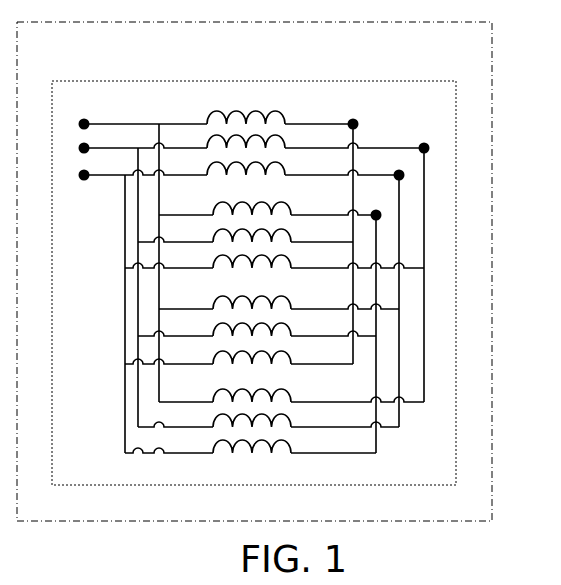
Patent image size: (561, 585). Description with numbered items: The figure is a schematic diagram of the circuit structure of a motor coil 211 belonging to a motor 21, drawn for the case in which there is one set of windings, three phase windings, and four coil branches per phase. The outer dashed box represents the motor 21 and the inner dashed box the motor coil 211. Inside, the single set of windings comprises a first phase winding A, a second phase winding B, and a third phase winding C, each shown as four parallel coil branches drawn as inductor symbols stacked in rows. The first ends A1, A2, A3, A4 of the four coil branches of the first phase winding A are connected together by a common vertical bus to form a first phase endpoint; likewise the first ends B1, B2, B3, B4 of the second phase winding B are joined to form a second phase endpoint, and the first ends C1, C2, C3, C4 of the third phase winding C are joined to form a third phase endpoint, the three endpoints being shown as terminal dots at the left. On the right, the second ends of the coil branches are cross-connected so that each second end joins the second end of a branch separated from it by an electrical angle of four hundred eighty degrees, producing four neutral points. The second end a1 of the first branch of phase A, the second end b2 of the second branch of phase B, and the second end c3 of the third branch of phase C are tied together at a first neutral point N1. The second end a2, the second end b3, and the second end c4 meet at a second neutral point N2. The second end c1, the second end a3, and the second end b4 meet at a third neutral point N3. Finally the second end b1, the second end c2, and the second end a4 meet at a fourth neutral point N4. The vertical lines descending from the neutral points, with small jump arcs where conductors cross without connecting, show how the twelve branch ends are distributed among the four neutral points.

The motor 21 is at (492, 300).
The motor coil 211 is at (238, 80).
The first phase winding A is at (143, 120).
The second phase winding B is at (143, 144).
The third phase winding C is at (143, 171).
The first neutral point N1 is at (361, 125).
The second neutral point N2 is at (374, 208).
The third neutral point N3 is at (396, 169).
The fourth neutral point N4 is at (423, 142).
The first end of first coil branch of first phase winding A1 is at (231, 116).
The second end of first coil branch of first phase winding a1 is at (319, 116).
The first end of first coil branch of second phase winding B1 is at (231, 140).
The second end of first coil branch of second phase winding b1 is at (354, 140).
The first end of first coil branch of third phase winding C1 is at (231, 167).
The second end of first coil branch of third phase winding c1 is at (342, 167).
The first end of second coil branch of first phase winding A2 is at (236, 207).
The second end of second coil branch of first phase winding a2 is at (333, 207).
The first end of second coil branch of second phase winding B2 is at (236, 234).
The second end of second coil branch of second phase winding b2 is at (322, 234).
The first end of second coil branch of third phase winding C2 is at (236, 260).
The second end of second coil branch of third phase winding c2 is at (357, 260).
The first end of third coil branch of first phase winding A3 is at (236, 301).
The second end of third coil branch of first phase winding a3 is at (345, 301).
The first end of third coil branch of second phase winding B3 is at (236, 328).
The second end of third coil branch of second phase winding b3 is at (333, 328).
The first end of third coil branch of third phase winding C3 is at (236, 356).
The second end of third coil branch of third phase winding c3 is at (322, 356).
The first end of fourth coil branch of first phase winding A4 is at (236, 394).
The second end of fourth coil branch of first phase winding a4 is at (357, 394).
The first end of fourth coil branch of second phase winding B4 is at (236, 419).
The second end of fourth coil branch of second phase winding b4 is at (345, 419).
The first end of fourth coil branch of third phase winding C4 is at (236, 445).
The second end of fourth coil branch of third phase winding c4 is at (333, 445).